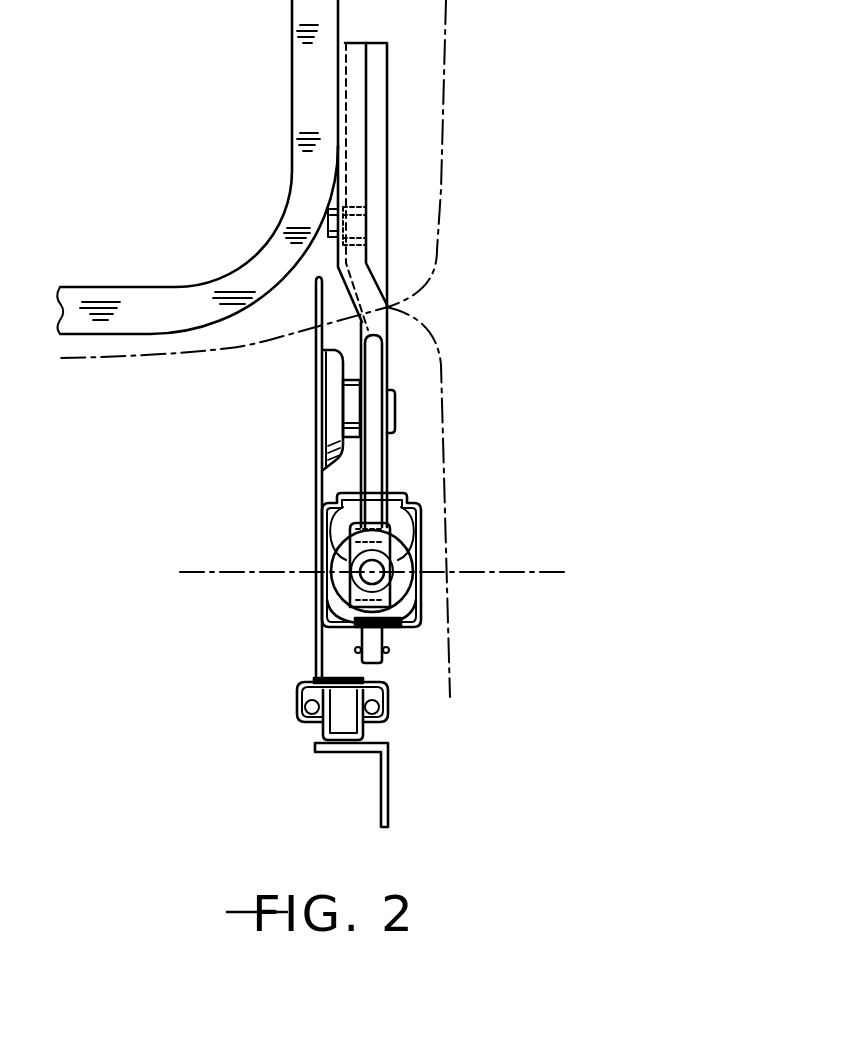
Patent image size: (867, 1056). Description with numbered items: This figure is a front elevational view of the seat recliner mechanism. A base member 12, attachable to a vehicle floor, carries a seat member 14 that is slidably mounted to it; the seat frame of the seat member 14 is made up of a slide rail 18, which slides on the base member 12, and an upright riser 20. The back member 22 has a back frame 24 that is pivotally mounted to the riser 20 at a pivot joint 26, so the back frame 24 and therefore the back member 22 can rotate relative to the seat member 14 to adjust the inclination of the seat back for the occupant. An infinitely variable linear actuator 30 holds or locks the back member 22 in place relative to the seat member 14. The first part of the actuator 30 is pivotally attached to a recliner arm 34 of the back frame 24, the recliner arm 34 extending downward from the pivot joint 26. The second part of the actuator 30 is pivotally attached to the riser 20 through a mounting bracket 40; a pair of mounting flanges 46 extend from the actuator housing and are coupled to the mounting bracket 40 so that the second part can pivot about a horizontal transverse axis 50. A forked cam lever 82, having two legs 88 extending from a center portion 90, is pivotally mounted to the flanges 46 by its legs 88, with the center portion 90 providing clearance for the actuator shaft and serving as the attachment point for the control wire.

The base member 12 is at (368, 728).
The seat member 14 is at (450, 430).
The slide rail 18 is at (305, 677).
The riser 20 is at (313, 484).
The back member 22 is at (447, 117).
The back frame 24 is at (390, 90).
The pivot joint 26 is at (393, 388).
The infinitely variable linear actuator 30 is at (437, 593).
The recliner arm 34 is at (388, 447).
The mounting bracket 40 is at (412, 520).
The mounting flanges 46 is at (315, 603).
The horizontal transverse axis 50 is at (213, 573).
The cam lever 82 is at (343, 630).
The legs 88 is at (402, 540).
The center portion 90 is at (382, 642).